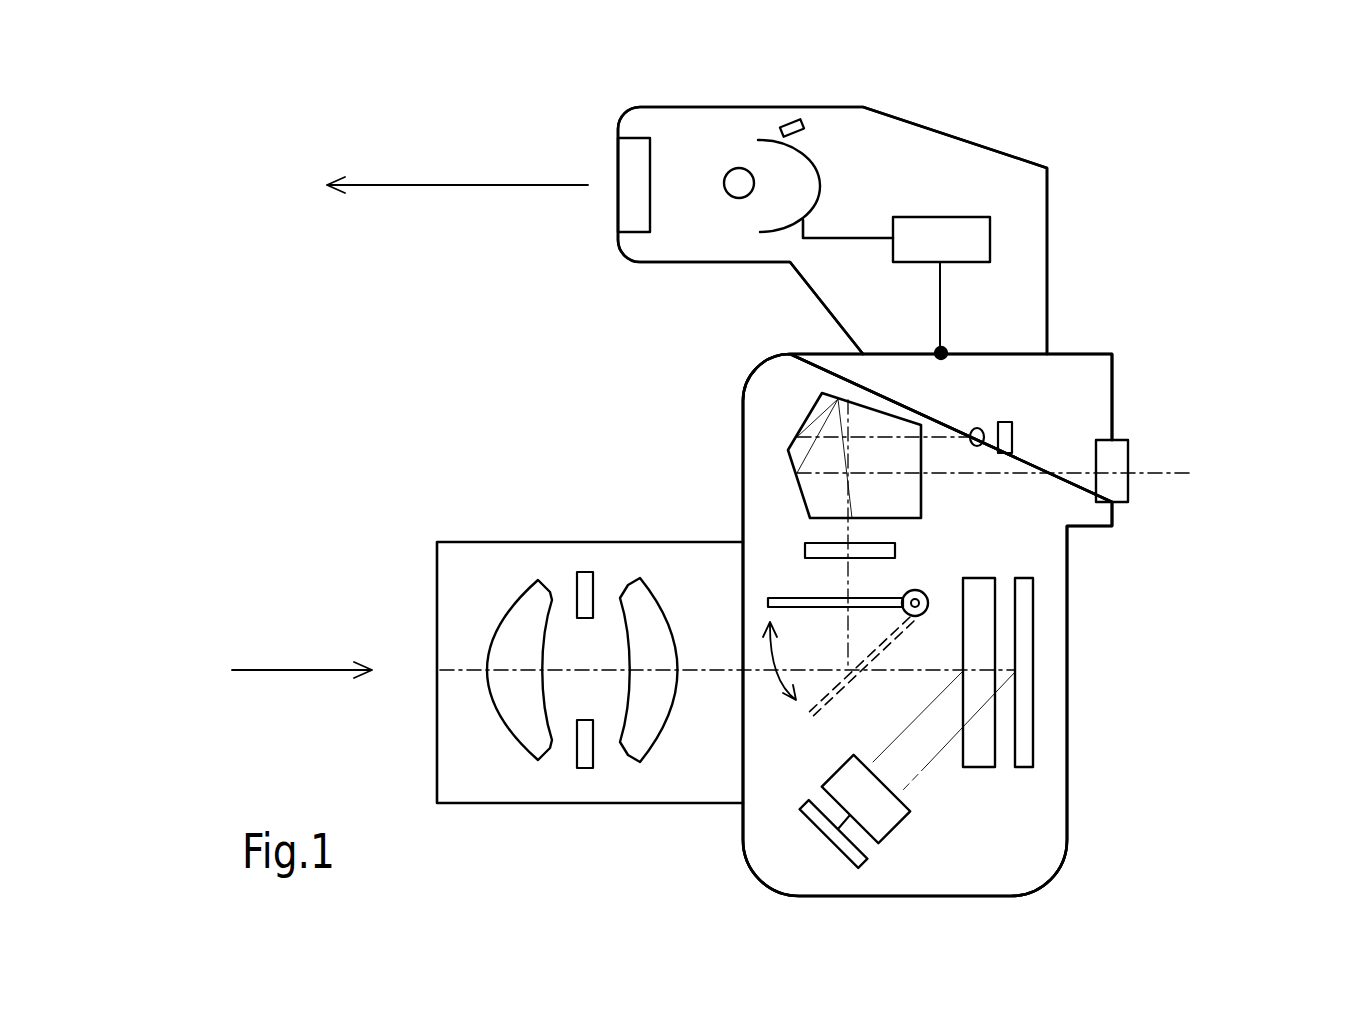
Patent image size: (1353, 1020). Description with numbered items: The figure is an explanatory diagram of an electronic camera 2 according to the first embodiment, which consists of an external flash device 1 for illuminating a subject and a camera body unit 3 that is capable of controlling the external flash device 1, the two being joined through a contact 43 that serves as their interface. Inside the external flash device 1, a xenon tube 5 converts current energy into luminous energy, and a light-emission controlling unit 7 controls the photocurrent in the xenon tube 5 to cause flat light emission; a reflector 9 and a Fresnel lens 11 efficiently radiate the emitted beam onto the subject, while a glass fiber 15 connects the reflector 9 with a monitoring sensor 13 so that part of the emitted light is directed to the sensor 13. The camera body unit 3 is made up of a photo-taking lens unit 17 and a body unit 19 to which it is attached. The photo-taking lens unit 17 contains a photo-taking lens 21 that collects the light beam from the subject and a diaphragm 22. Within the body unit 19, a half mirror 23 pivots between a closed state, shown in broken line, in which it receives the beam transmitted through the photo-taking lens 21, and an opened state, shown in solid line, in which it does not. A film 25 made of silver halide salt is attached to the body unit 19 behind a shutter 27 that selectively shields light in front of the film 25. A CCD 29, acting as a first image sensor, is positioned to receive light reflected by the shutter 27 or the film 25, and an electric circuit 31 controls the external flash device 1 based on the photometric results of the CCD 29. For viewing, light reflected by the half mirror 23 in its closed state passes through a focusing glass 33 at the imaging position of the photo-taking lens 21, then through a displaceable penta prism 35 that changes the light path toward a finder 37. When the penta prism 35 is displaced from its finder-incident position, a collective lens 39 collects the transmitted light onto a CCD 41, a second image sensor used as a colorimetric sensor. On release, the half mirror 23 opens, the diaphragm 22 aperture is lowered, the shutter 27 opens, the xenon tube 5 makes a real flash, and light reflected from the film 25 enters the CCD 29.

The external flash device 1 is at (1057, 115).
The electronic camera 2 is at (1232, 88).
The camera body unit 3 is at (1179, 497).
The xenon tube 5 is at (735, 178).
The light-emission controlling unit 7 is at (797, 126).
The reflector 9 is at (817, 162).
The Fresnel lens 11 is at (633, 157).
The sensor 13 is at (982, 242).
The glass fiber 15 is at (860, 238).
The photo-taking lens unit 17 is at (617, 783).
The body unit 19 is at (1045, 818).
The photo-taking lens 21 is at (645, 603).
The diaphragm 22 is at (582, 753).
The half mirror 23 is at (788, 607).
The film 25 is at (1027, 622).
The shutter 27 is at (980, 592).
The CCD 29 is at (888, 823).
The electric circuit 31 is at (840, 850).
The focusing glass 33 is at (817, 550).
The penta prism 35 is at (867, 420).
The finder 37 is at (1118, 460).
The collective lens 39 is at (978, 427).
The CCD 41 is at (1011, 432).
The contact 43 is at (942, 352).